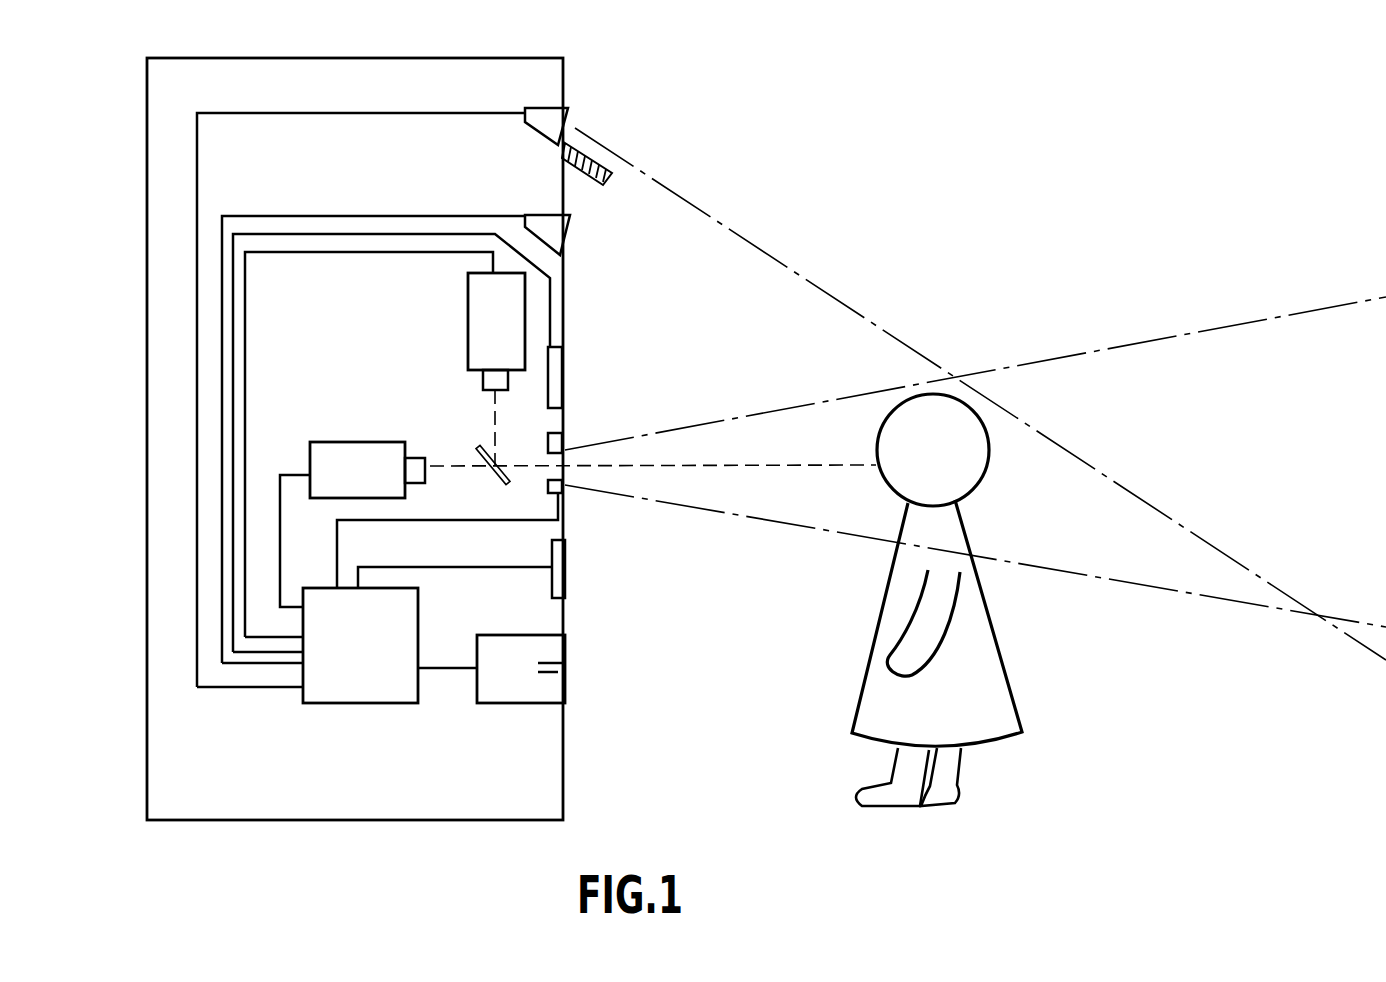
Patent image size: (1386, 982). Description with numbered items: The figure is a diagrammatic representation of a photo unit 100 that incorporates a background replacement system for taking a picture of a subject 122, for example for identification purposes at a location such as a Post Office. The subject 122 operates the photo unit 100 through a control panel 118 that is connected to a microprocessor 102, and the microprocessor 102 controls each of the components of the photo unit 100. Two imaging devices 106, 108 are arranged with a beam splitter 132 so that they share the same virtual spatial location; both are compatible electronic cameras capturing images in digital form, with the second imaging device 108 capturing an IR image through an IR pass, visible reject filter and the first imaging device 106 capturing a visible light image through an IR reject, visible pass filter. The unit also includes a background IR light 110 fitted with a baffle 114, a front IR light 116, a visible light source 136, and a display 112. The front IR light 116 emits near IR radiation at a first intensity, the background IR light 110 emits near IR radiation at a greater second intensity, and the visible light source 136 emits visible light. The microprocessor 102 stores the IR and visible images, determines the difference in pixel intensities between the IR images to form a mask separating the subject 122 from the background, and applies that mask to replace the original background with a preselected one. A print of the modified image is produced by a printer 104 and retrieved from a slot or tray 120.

The photo unit 100 is at (356, 802).
The microprocessor 102 is at (425, 727).
The printer 104 is at (505, 704).
The imaging device 106 is at (330, 442).
The imaging device 108 is at (468, 327).
The background IR light 110 is at (545, 106).
The display 112 is at (562, 370).
The baffle 114 is at (585, 183).
The front IR light 116 is at (588, 512).
The control panel 118 is at (565, 567).
The slot or tray 120 is at (566, 668).
The subject 122 is at (906, 810).
The beam splitter 132 is at (483, 450).
The visible light source 136 is at (545, 214).